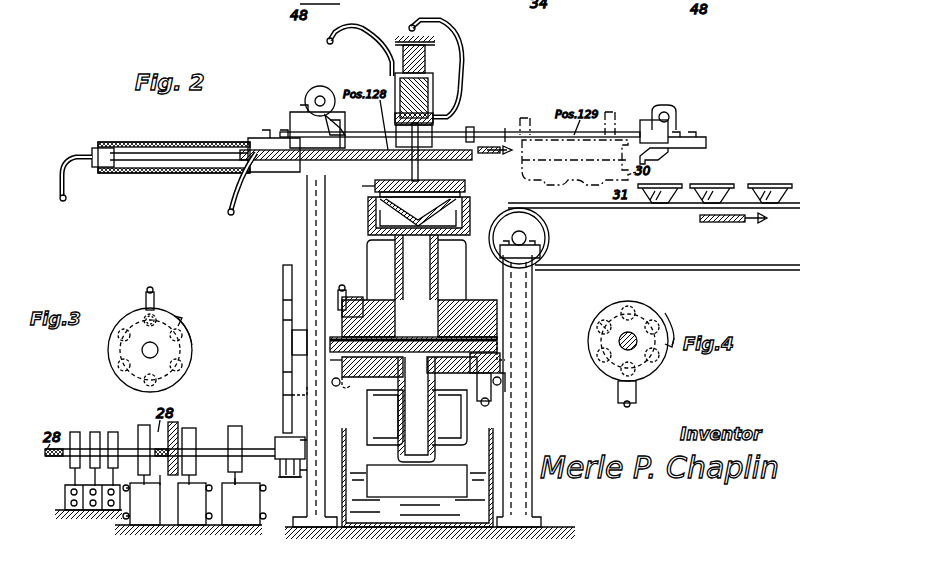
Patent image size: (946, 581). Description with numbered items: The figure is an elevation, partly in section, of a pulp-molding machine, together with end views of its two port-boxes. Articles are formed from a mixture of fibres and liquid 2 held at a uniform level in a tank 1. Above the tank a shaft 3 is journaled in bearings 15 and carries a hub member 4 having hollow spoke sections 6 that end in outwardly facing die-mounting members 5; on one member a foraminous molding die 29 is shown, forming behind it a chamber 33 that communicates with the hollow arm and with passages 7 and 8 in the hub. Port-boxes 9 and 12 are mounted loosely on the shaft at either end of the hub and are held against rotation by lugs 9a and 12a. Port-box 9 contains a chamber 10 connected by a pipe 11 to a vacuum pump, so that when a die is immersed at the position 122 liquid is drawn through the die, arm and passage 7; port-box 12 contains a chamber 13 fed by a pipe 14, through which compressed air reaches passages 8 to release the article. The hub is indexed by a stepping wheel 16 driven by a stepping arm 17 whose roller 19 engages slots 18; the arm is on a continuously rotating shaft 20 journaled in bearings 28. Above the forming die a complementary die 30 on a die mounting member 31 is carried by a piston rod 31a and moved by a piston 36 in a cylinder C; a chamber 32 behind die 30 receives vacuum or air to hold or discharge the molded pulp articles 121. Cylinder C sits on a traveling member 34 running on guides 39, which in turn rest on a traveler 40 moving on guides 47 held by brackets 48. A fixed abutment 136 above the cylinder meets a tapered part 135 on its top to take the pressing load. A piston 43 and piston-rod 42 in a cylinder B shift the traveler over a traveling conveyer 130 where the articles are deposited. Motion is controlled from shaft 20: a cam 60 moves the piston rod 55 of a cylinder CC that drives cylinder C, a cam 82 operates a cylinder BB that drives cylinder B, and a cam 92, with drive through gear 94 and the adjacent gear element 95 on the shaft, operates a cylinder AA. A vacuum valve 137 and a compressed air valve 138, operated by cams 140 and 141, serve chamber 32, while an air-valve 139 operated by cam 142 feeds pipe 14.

In FIG. 2, the tank 1 is at (480, 449).
In FIG. 2, the liquid 2 is at (460, 488).
In FIG. 2, the shaft 3 is at (410, 368).
In FIG. 4, the shaft 3 is at (630, 338).
In FIG. 2, the hub member 4 is at (455, 305).
In FIG. 2, the die-mounting member 5 is at (470, 216).
In FIG. 2, the hollow spoke section 6 is at (436, 273).
In FIG. 2, the passage 7 is at (488, 382).
In FIG. 4, the passage 7 is at (660, 325).
In FIG. 2, the passage 8 is at (395, 314).
In FIG. 3, the passage 8 is at (118, 367).
In FIG. 2, the port-box 9 is at (520, 287).
In FIG. 4, the port-box 9 is at (660, 368).
In FIG. 2, the lug 9a is at (505, 392).
In FIG. 2, the chamber 10 is at (488, 364).
In FIG. 4, the chamber 10 is at (610, 322).
In FIG. 2, the pipe 11 is at (491, 396).
In FIG. 4, the pipe 11 is at (636, 396).
In FIG. 2, the port-box 12 is at (350, 322).
In FIG. 3, the port-box 12 is at (193, 352).
In FIG. 2, the lug 12a is at (360, 380).
In FIG. 2, the chamber 13 is at (360, 306).
In FIG. 3, the chamber 13 is at (158, 318).
In FIG. 2, the pipe 14 is at (346, 298).
In FIG. 3, the pipe 14 is at (152, 298).
In FIG. 2, the bearings 15 is at (444, 366).
In FIG. 2, the stepping wheel 16 is at (283, 268).
In FIG. 2, the stepping arm 17 is at (278, 468).
In FIG. 2, the slots 18 is at (283, 350).
In FIG. 2, the roller 19 is at (295, 485).
In FIG. 2, the shaft 20 is at (250, 450).
In FIG. 2, the bearings 28 is at (318, 462).
In FIG. 2, the molding die 29 is at (380, 212).
In FIG. 2, the complementary die 30 is at (466, 197).
In FIG. 2, the die mounting member 31 is at (462, 182).
In FIG. 2, the piston rod 31a is at (418, 168).
In FIG. 2, the chamber 32 is at (358, 183).
In FIG. 2, the chamber 33 is at (380, 222).
In FIG. 2, the traveling member 34 is at (476, 132).
In FIG. 2, the piston 36 is at (432, 108).
In FIG. 2, the guides 39 is at (505, 133).
In FIG. 2, the traveler 40 is at (648, 121).
In FIG. 2, the piston-rod 42 is at (166, 162).
In FIG. 2, the piston 43 is at (110, 148).
In FIG. 2, the guides 47 is at (668, 117).
In FIG. 2, the brackets 48 is at (700, 137).
In FIG. 2, the piston rod 55 is at (235, 478).
In FIG. 2, the cam 60 is at (235, 426).
In FIG. 2, the cam 82 is at (192, 426).
In FIG. 2, the cam 92 is at (143, 426).
In FIG. 2, the gear 94 is at (166, 475).
In FIG. 2, the gear 95 is at (175, 422).
In FIG. 2, the molded pulp articles 121 is at (665, 185).
In FIG. 2, the position 122 is at (455, 478).
In FIG. 2, the traveling conveyer 130 is at (620, 208).
In FIG. 2, the tapered part 135 is at (425, 70).
In FIG. 2, the fixed abutment 136 is at (420, 55).
In FIG. 2, the vacuum valve 137 is at (70, 505).
In FIG. 2, the compressed air valve 138 is at (88, 512).
In FIG. 2, the air-valve 139 is at (110, 512).
In FIG. 2, the cam 140 is at (76, 432).
In FIG. 2, the cam 141 is at (96, 440).
In FIG. 2, the cam 142 is at (113, 434).
In FIG. 2, the cylinder B is at (190, 140).
In FIG. 2, the cylinder C is at (436, 96).
In FIG. 2, the operating cylinder AA is at (141, 504).
In FIG. 2, the driving cylinder BB is at (195, 504).
In FIG. 2, the cylinder CC is at (244, 504).